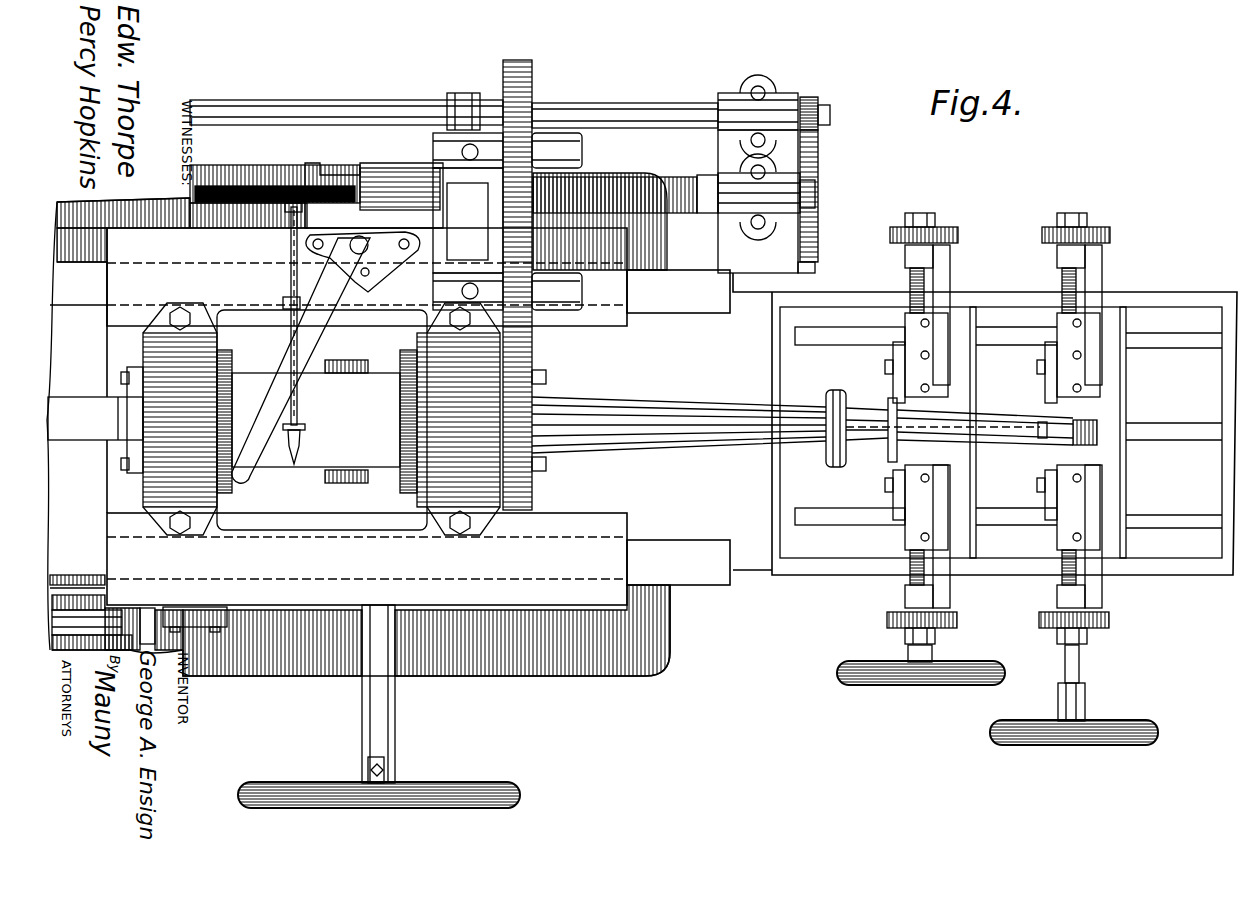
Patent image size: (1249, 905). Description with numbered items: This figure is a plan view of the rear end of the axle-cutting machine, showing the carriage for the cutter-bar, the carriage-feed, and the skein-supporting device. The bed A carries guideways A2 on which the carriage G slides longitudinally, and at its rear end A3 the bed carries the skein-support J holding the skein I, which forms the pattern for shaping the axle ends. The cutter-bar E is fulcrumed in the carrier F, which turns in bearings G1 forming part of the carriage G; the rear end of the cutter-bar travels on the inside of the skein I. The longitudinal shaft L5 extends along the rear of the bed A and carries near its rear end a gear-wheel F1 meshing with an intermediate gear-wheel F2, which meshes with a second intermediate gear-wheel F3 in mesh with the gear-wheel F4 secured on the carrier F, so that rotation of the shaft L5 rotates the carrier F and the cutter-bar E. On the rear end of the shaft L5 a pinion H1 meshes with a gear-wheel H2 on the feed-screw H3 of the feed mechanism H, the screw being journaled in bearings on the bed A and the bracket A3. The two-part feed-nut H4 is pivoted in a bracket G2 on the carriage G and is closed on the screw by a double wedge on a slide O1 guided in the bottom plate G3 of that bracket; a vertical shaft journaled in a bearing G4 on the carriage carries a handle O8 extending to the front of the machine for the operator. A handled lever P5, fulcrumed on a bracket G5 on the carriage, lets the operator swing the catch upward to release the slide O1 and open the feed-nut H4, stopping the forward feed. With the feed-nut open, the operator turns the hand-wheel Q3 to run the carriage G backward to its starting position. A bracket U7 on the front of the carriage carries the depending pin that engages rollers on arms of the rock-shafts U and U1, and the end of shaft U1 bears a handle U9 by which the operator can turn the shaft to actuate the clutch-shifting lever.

The shaft L5 is at (367, 104).
The feed mechanism H is at (665, 100).
The pinion H1 is at (806, 100).
The gear-wheel H2 is at (820, 186).
The feed-screw H3 is at (245, 180).
The feed-nut H4 is at (371, 182).
The gear-wheel F1 is at (512, 60).
The intermediate gear-wheel F2 is at (470, 160).
The second intermediate gear-wheel F3 is at (524, 285).
The gear-wheel F4 is at (531, 484).
The carrier F is at (316, 420).
The carriage G is at (318, 530).
The bearings G1 is at (470, 388).
The bracket G2 is at (415, 232).
The bottom plate G3 is at (314, 176).
The bearing G4 is at (384, 272).
The bracket G5 is at (283, 301).
The slide O1 is at (360, 246).
The handle O8 is at (267, 408).
The handled lever P5 is at (288, 248).
The bed A is at (814, 415).
The guideways A2 is at (659, 300).
The rear end of the bed A3 is at (816, 572).
The cutter-bar E is at (95, 418).
The skein I is at (990, 416).
The skein-support J is at (893, 368).
The hand-wheel Q3 is at (434, 800).
The shaft U is at (52, 627).
The shaft U1 is at (77, 582).
The bracket U7 is at (204, 612).
The handle U9 is at (150, 614).